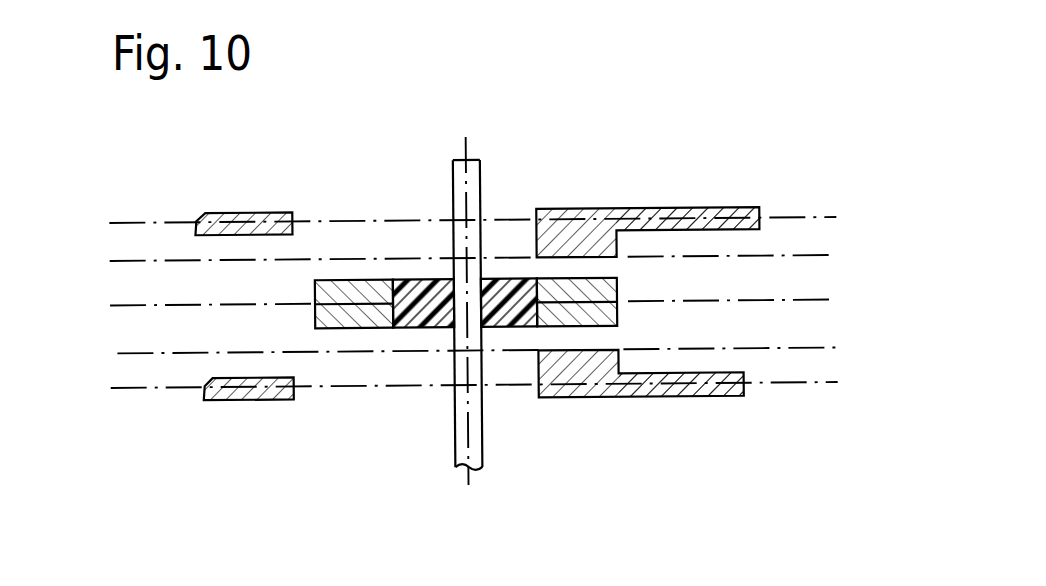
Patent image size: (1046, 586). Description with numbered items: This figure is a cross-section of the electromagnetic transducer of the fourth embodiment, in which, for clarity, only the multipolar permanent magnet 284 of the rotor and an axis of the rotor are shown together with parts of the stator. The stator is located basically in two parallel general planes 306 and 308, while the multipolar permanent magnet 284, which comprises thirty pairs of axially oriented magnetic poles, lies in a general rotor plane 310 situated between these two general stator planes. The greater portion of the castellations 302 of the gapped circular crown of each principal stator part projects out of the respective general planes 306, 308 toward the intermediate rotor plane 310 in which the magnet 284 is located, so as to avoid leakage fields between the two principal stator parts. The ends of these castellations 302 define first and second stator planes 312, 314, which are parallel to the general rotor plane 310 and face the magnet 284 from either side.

The multipolar permanent magnet 284 is at (368, 279).
The castellations 302 is at (567, 209).
The general plane 306 is at (786, 213).
The general plane 308 is at (825, 400).
The general rotor plane 310 is at (830, 295).
The first stator plane 312 is at (659, 243).
The second stator plane 314 is at (768, 366).